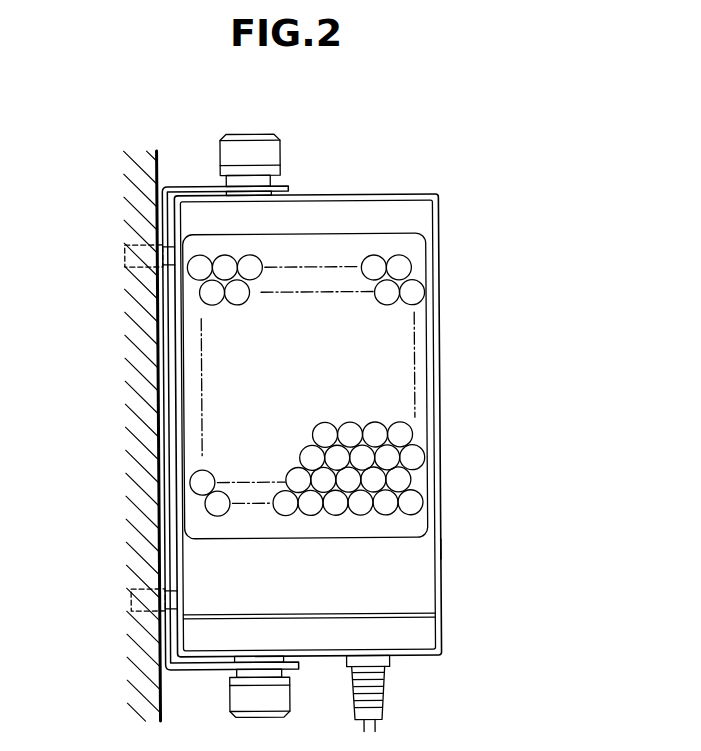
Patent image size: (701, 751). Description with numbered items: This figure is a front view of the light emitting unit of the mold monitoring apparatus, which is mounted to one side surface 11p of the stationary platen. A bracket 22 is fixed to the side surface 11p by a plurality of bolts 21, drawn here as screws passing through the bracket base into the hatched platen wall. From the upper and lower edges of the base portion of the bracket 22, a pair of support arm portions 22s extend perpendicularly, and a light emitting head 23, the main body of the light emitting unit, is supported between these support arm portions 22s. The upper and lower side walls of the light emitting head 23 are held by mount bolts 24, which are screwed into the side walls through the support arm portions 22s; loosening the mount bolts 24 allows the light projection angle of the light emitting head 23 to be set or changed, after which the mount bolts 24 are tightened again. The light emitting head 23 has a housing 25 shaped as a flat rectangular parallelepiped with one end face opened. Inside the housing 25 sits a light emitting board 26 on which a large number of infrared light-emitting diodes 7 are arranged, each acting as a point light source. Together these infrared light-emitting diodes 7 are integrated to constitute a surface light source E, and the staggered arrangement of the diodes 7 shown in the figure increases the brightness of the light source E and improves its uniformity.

The infrared light-emitting diode 7 is at (200, 289).
The side surface 11p is at (158, 162).
The bolt 21 is at (143, 243).
The bracket 22 is at (158, 390).
The support arm portion 22s is at (290, 187).
The light emitting head 23 is at (441, 232).
The mount bolt 24 is at (282, 140).
The housing 25 is at (441, 551).
The light emitting board 26 is at (428, 350).
The surface light source E is at (377, 528).